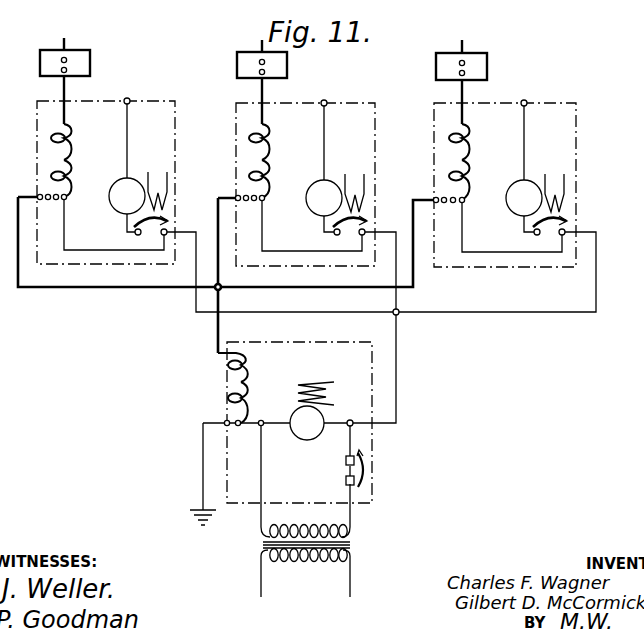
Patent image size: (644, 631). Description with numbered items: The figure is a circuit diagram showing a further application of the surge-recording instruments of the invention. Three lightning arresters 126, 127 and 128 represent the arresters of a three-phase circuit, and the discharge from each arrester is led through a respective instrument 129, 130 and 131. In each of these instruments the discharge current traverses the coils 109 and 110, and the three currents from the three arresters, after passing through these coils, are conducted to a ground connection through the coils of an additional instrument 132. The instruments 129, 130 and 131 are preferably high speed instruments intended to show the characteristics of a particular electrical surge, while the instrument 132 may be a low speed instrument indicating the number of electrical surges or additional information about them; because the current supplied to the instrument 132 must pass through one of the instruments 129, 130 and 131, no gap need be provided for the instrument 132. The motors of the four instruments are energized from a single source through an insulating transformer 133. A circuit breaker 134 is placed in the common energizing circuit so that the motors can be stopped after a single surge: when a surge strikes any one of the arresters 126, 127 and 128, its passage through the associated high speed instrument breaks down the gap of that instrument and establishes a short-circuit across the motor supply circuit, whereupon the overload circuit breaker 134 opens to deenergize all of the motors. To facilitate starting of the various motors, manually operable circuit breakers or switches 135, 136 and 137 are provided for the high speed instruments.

The coil 109 is at (66, 140).
The coil 110 is at (66, 178).
The lightning arrester 126 is at (90, 67).
The lightning arrester 127 is at (287, 68).
The lightning arrester 128 is at (487, 69).
The instrument 129 is at (153, 106).
The instrument 130 is at (355, 106).
The instrument 131 is at (557, 106).
The additional instrument 132 is at (329, 344).
The insulating transformer 133 is at (352, 545).
The circuit breaker 134 is at (346, 468).
The manually operable circuit breaker or switch 135 is at (158, 228).
The manually operable circuit breaker or switch 136 is at (357, 228).
The manually operable circuit breaker or switch 137 is at (557, 228).